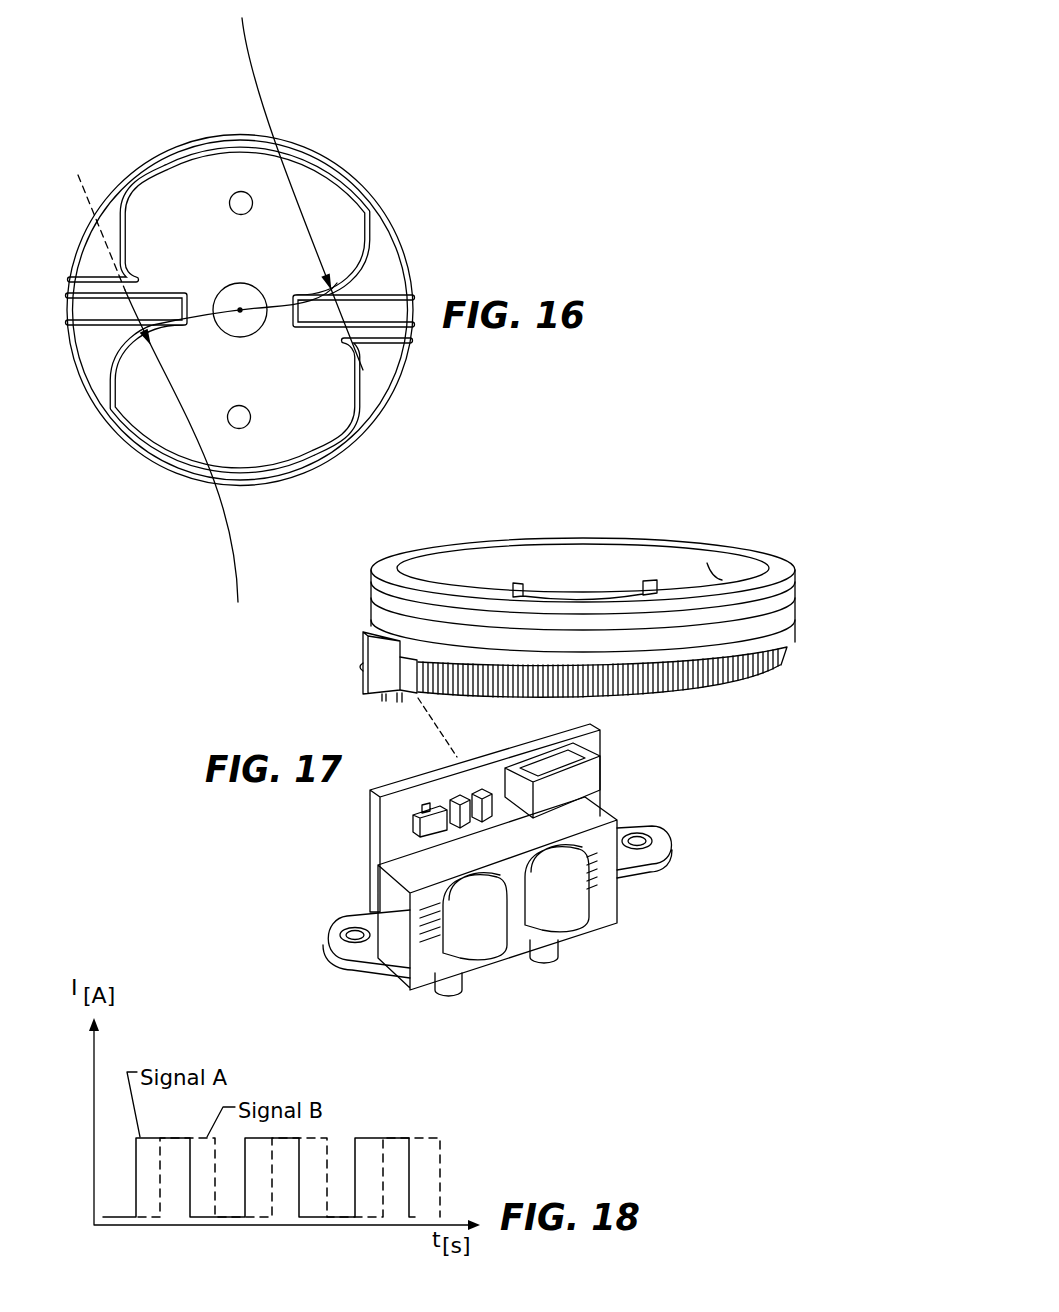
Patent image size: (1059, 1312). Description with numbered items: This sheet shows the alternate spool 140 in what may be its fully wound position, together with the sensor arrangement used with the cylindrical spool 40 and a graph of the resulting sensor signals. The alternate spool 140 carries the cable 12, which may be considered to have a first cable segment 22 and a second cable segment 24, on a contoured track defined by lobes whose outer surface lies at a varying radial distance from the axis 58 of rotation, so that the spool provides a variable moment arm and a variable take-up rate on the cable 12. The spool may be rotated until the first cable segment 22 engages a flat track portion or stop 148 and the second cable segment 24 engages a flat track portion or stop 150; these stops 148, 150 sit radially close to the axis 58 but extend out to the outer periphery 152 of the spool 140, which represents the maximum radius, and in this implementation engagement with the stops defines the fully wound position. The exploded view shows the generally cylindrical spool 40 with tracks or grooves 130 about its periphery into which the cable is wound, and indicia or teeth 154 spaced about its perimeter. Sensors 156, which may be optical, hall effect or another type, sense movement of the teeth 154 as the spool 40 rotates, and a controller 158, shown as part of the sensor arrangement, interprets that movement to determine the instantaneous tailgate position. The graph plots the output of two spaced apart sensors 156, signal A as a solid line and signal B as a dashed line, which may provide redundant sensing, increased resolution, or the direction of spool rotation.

In FIG. 16, the cable 12 is at (302, 194).
In FIG. 16, the first cable segment 22 is at (258, 91).
In FIG. 16, the second cable segment 24 is at (238, 558).
In FIG. 16, the alternate spool 140 is at (251, 310).
In FIG. 16, the flat track portion or stop 150 is at (87, 292).
In FIG. 16, the outer periphery 152 is at (412, 278).
In FIG. 16, the flat track portion or stop 148 is at (400, 330).
In FIG. 16, the axis of rotation 58 is at (241, 312).
In FIG. 17, the spool 40 is at (564, 756).
In FIG. 17, the tracks or grooves 130 is at (781, 648).
In FIG. 17, the indicia or teeth 154 is at (753, 677).
In FIG. 17, the controller 158 is at (378, 673).
In FIG. 17, the sensors 156 is at (542, 912).